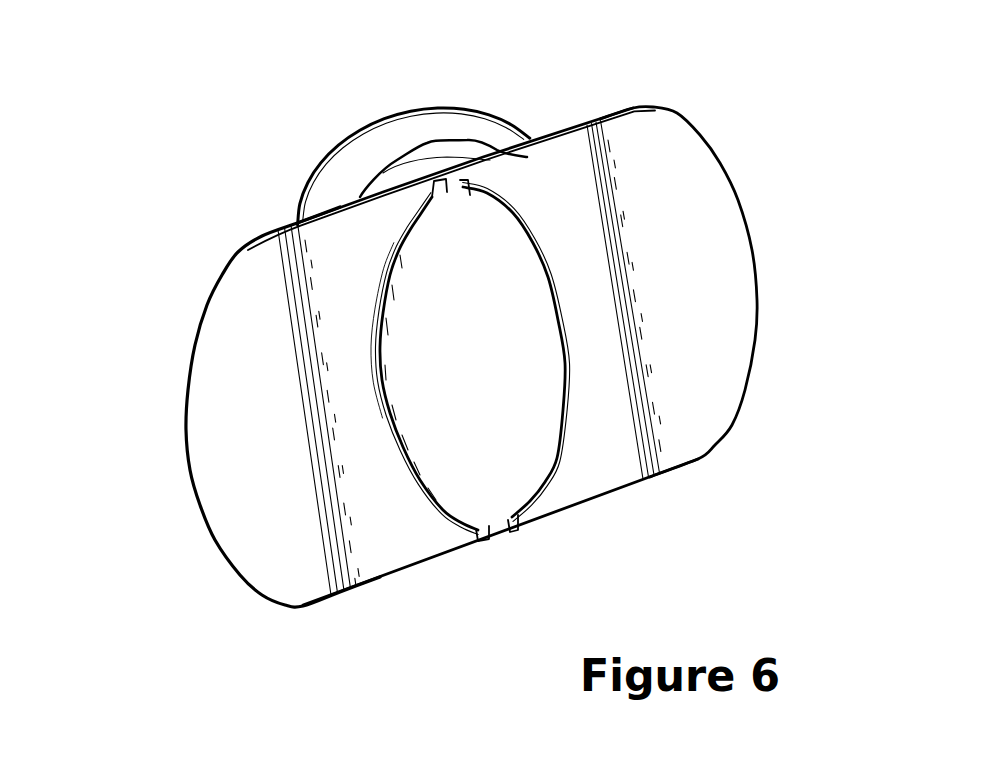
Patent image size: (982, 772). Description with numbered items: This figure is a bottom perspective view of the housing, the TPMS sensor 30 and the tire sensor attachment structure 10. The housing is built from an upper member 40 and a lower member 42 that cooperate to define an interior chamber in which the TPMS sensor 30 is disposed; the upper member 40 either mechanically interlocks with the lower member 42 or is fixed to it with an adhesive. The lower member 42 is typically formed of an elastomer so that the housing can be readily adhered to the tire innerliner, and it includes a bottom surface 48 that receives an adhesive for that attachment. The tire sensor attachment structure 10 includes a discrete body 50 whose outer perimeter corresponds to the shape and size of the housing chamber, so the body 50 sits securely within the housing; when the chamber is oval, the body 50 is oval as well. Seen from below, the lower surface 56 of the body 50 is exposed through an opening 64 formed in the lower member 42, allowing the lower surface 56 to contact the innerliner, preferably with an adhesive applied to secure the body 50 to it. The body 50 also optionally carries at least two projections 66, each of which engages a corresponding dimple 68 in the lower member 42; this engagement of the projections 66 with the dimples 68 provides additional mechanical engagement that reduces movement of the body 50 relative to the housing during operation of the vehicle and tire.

The tire sensor attachment structure 10 is at (266, 618).
The TPMS sensor 30 is at (460, 95).
The upper member 40 is at (333, 153).
The lower member 42 is at (227, 263).
The bottom surface 48 is at (692, 182).
The body 50 is at (548, 508).
The lower surface 56 is at (449, 473).
The opening 64 is at (550, 292).
The projections 66 is at (447, 190).
The dimples 68 is at (466, 182).